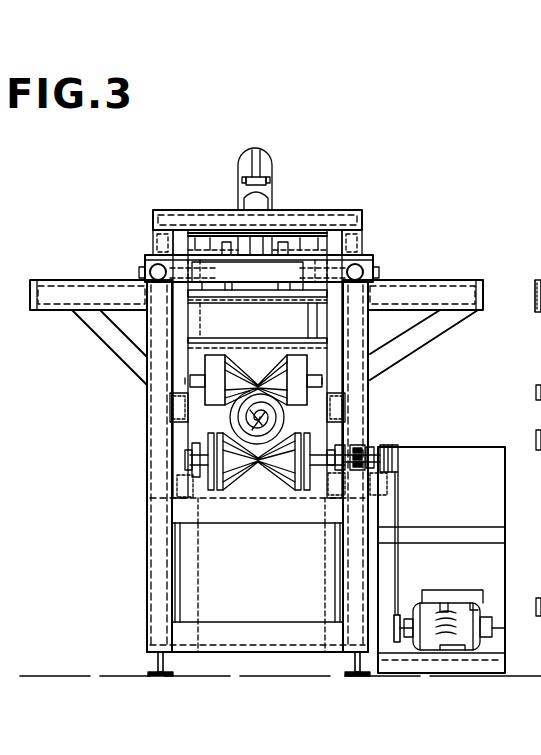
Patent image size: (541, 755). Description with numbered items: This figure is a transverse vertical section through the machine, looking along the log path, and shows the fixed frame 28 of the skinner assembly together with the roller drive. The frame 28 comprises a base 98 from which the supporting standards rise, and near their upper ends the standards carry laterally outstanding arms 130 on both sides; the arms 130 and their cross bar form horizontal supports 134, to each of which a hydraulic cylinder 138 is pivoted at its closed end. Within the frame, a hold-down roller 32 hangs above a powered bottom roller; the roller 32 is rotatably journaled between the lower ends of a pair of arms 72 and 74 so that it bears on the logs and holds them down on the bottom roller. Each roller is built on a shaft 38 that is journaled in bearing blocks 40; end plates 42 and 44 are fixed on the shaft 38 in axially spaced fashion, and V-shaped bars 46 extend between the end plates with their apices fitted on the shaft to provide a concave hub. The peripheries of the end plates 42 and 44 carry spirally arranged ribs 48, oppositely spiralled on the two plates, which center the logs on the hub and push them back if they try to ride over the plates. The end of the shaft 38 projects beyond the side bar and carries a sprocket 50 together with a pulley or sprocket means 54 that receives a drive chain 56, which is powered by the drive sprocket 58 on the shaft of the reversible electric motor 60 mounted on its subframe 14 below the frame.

The frame 14 is at (540, 508).
The frame 28 is at (157, 680).
The hold-down rollers 32 is at (300, 376).
The shafts 38 is at (320, 482).
The bearing blocks 40 is at (358, 445).
The end plate 42 is at (223, 484).
The end plate 44 is at (287, 435).
The V-shaped bars 46 is at (273, 482).
The spirally arranged ribs 48 is at (205, 438).
The sprockets 50 is at (372, 447).
The pulley or sprocket means 54 is at (400, 452).
The drive chain 56 is at (398, 513).
The drive sprocket 58 is at (399, 617).
The reversible electric motor 60 is at (477, 607).
The arm 72 is at (313, 322).
The arm 74 is at (199, 329).
The base 98 is at (257, 643).
The laterally outstanding arms 130 is at (80, 283).
The horizontal supports 134 is at (53, 313).
The hydraulic cylinder 138 is at (540, 381).